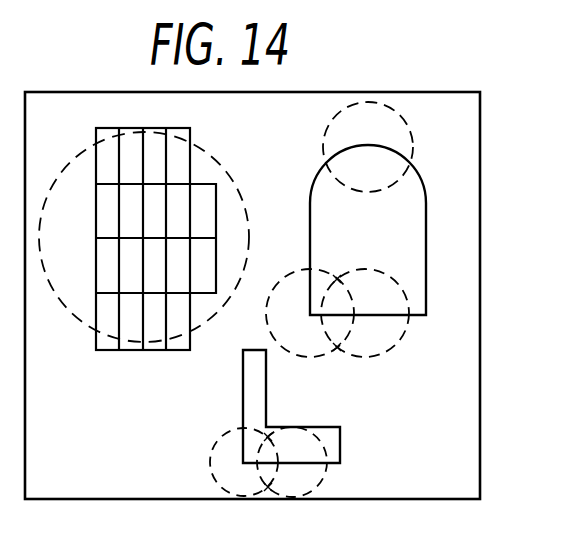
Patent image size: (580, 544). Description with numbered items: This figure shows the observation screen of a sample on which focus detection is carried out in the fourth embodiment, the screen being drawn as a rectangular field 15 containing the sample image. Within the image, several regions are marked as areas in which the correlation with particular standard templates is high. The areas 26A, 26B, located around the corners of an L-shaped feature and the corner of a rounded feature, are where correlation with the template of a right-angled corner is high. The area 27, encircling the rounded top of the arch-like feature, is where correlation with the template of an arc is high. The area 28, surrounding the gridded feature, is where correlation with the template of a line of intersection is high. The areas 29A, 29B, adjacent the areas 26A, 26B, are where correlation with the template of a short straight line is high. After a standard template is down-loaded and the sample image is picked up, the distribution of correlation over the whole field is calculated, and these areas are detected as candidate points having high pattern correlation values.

The base plate / panel 15 is at (481, 158).
The area 27 is at (323, 150).
The area 28 is at (66, 312).
The area 26A is at (208, 474).
The area 26B is at (321, 358).
The area 29A is at (324, 478).
The area 29B is at (385, 350).